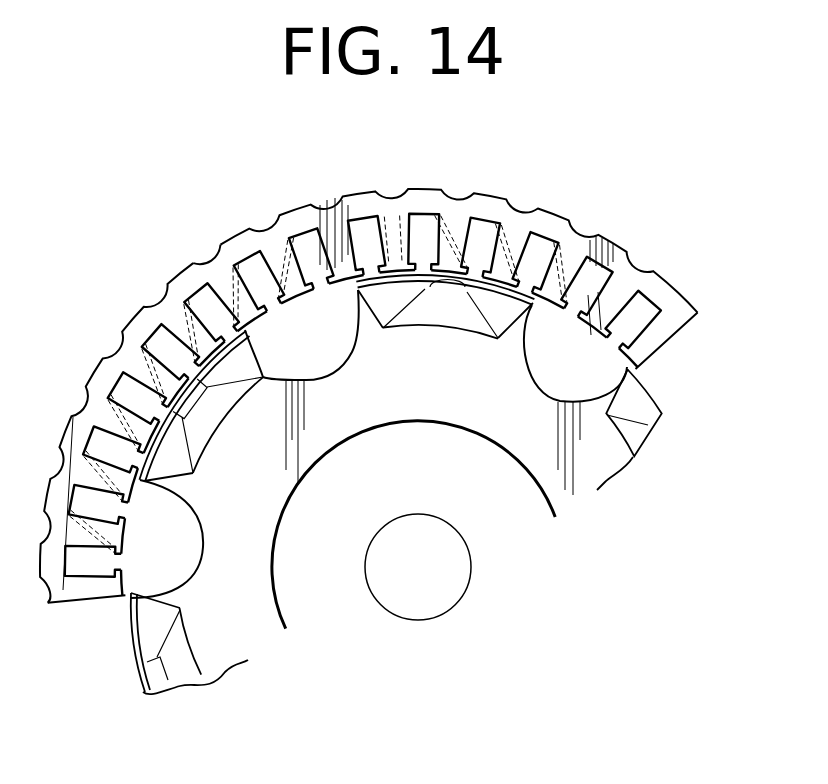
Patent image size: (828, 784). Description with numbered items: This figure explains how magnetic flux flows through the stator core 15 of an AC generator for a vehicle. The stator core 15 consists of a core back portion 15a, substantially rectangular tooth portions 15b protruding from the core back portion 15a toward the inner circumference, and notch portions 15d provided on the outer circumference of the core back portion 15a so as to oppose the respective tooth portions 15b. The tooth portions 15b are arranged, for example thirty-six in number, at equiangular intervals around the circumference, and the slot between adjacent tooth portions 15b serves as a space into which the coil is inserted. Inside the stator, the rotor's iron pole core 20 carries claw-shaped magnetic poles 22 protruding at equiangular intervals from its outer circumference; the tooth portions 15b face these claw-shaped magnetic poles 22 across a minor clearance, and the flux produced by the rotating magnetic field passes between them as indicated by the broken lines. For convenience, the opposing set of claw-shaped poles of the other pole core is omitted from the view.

The stator core 15 is at (369, 380).
The core back portion 15a is at (238, 242).
The tooth portion 15b is at (282, 260).
The notch portion 15d is at (205, 252).
The pole core 20 is at (406, 484).
The claw-shaped magnetic pole 22 is at (500, 314).